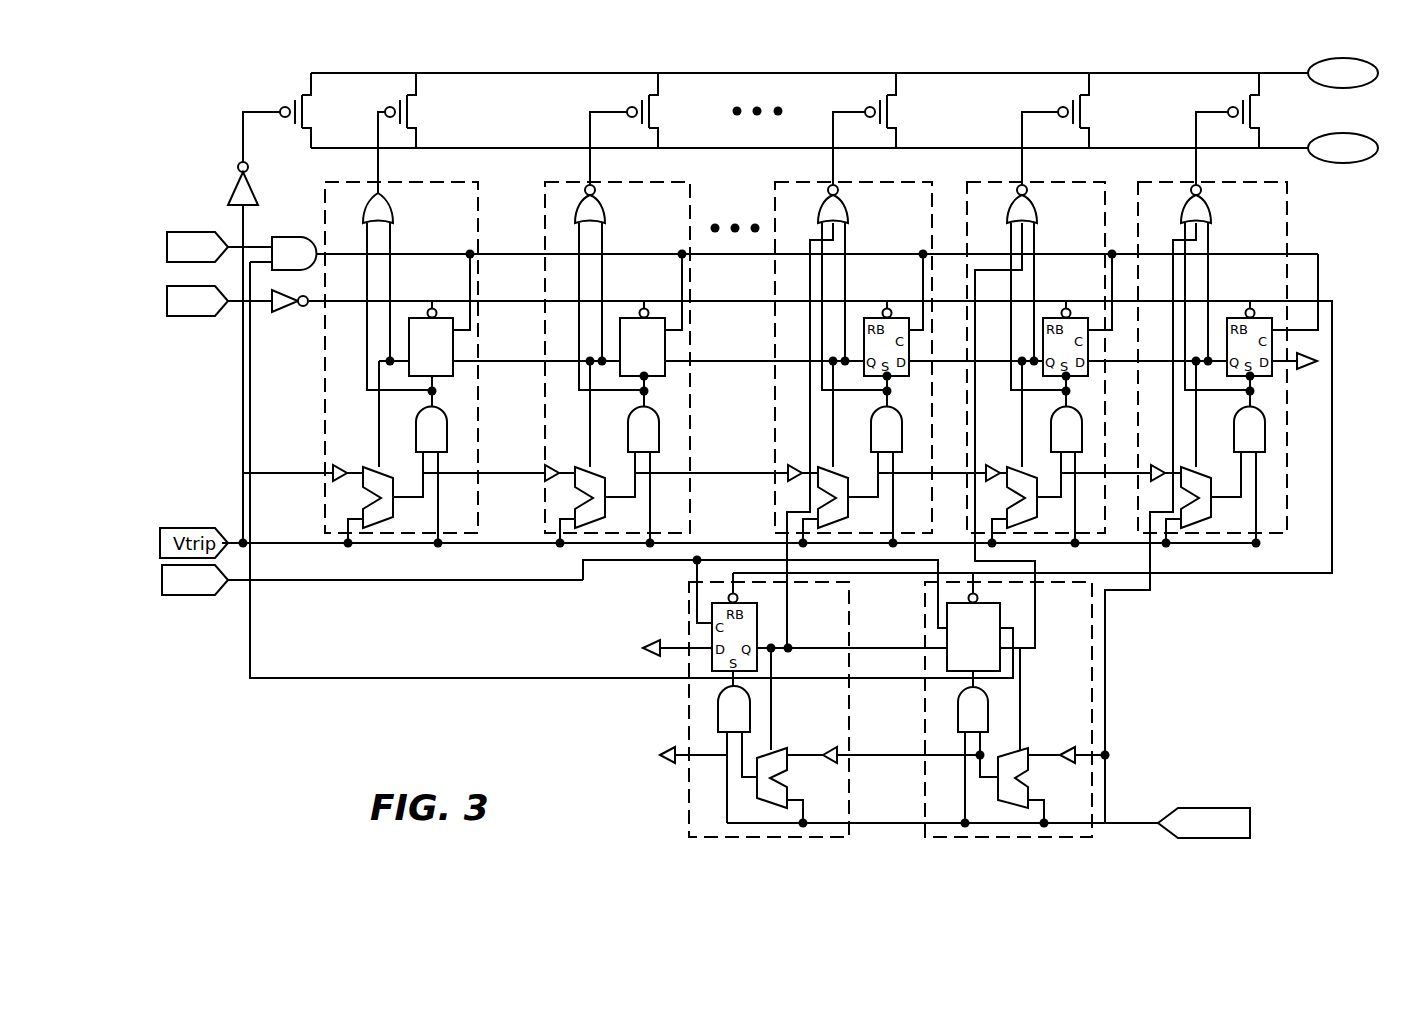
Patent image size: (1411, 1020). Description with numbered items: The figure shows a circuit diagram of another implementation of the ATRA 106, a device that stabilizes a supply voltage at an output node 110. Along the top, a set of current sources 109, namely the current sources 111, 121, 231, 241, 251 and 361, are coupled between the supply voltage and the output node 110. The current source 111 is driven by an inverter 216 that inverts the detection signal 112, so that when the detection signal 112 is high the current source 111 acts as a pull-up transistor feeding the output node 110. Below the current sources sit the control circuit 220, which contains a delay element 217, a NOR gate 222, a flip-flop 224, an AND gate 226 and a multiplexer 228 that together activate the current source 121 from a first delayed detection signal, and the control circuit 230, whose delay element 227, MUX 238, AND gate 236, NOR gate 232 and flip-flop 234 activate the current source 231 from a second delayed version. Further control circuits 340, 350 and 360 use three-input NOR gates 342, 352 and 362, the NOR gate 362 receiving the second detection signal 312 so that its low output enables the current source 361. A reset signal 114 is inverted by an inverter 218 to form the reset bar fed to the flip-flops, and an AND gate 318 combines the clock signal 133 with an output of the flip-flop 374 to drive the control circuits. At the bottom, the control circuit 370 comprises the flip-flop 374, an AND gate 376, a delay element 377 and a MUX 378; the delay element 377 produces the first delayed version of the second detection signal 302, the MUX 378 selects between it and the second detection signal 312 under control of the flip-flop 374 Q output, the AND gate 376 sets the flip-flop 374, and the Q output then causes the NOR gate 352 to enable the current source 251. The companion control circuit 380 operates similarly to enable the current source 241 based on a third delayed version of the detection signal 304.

The ATRA 106 is at (230, 68).
The current sources 109 is at (265, 104).
The output node 110 is at (1290, 152).
The current source 111 is at (303, 110).
The detection signal 112 is at (234, 541).
The reset signal 114 is at (237, 304).
The current source 121 is at (408, 110).
The clock signal 133 is at (232, 610).
The inverter 216 is at (258, 190).
The delay element 217 is at (344, 462).
The inverter 218 is at (284, 310).
The control circuit 220 is at (455, 182).
The logical NOR gate 222 is at (395, 206).
The flip-flop 224 is at (455, 344).
The logical AND gate 226 is at (449, 428).
The delay element 227 is at (562, 462).
The multiplexer 228 is at (393, 514).
The control circuit 230 is at (690, 182).
The current source 231 is at (650, 110).
The NOR gate 232 is at (607, 206).
The flip-flop 234 is at (667, 345).
The AND gate 236 is at (661, 428).
The MUX 238 is at (605, 514).
The current source 241 is at (888, 110).
The current source 251 is at (1081, 110).
The first delayed version of the second detection signal 302 is at (1042, 751).
The third delayed version of the detection signal 304 is at (794, 749).
The second detection signal 312 is at (1130, 822).
The AND gate 318 is at (293, 236).
The control circuit 340 is at (903, 182).
The NOR gate 342 is at (850, 206).
The control circuit 350 is at (1102, 180).
The NOR gate 352 is at (1039, 206).
The control circuit 360 is at (1230, 180).
The current source 361 is at (1251, 110).
The NOR gate 362 is at (1213, 206).
The control circuit 370 is at (922, 730).
The flip-flop 374 is at (1002, 614).
The AND gate 376 is at (990, 708).
The delay element 377 is at (1070, 745).
The MUX 378 is at (1030, 778).
The control circuit 380 is at (688, 732).